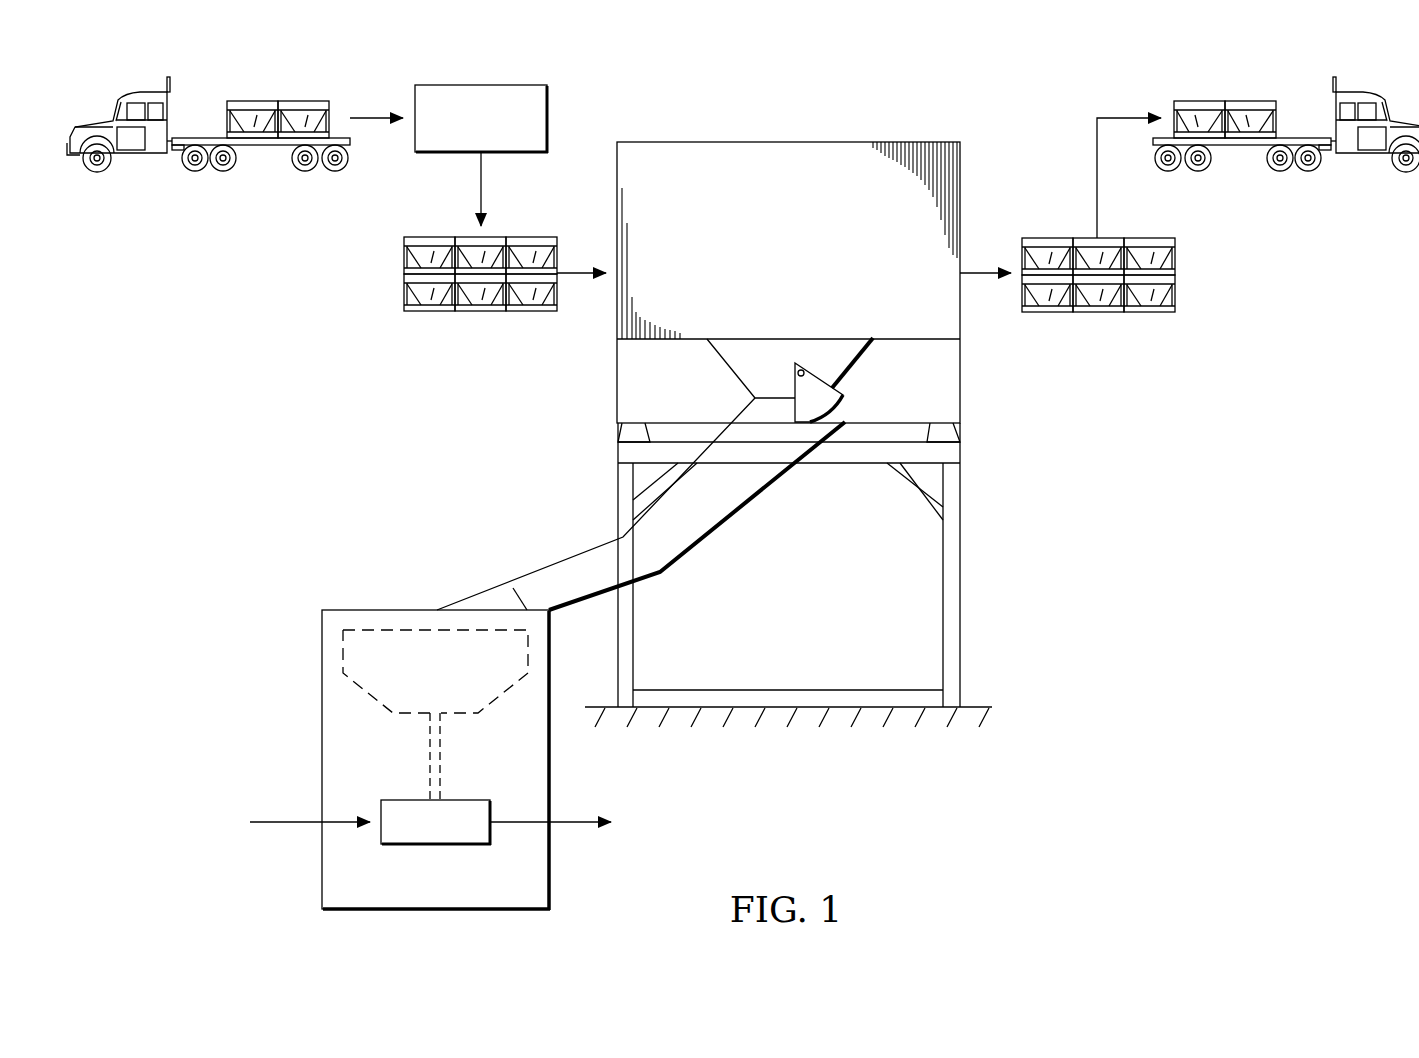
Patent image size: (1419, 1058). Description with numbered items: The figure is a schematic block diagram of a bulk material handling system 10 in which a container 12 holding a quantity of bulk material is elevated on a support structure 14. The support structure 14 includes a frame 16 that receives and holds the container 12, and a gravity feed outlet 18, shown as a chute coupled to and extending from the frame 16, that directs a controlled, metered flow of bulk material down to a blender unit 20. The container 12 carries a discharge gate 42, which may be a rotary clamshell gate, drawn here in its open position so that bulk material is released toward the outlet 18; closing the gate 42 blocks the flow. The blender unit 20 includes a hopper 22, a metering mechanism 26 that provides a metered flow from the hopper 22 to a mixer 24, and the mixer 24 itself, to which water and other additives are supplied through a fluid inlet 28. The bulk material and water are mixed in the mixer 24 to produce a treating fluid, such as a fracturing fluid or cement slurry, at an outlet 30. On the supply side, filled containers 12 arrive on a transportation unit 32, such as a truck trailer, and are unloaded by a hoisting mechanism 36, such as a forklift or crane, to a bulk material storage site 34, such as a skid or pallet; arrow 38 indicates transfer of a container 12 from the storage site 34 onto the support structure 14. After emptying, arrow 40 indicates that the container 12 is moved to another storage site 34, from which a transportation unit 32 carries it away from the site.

The bulk material handling system 10 is at (966, 88).
The container 12 is at (721, 139).
The support structure 14 is at (572, 434).
The frame 16 is at (962, 575).
The gravity feed outlet 18 is at (738, 511).
The blender unit 20 is at (316, 716).
The hopper 22 is at (396, 718).
The mixer 24 is at (436, 846).
The metering mechanism 26 is at (441, 746).
The fluid inlet 28 is at (281, 826).
The outlet 30 is at (606, 826).
The transportation unit 32 is at (226, 81).
The bulk material storage site 34 is at (413, 327).
The hoisting mechanism 36 is at (450, 85).
The arrow 38 is at (590, 268).
The arrow 40 is at (990, 268).
The discharge gate 42 is at (848, 410).